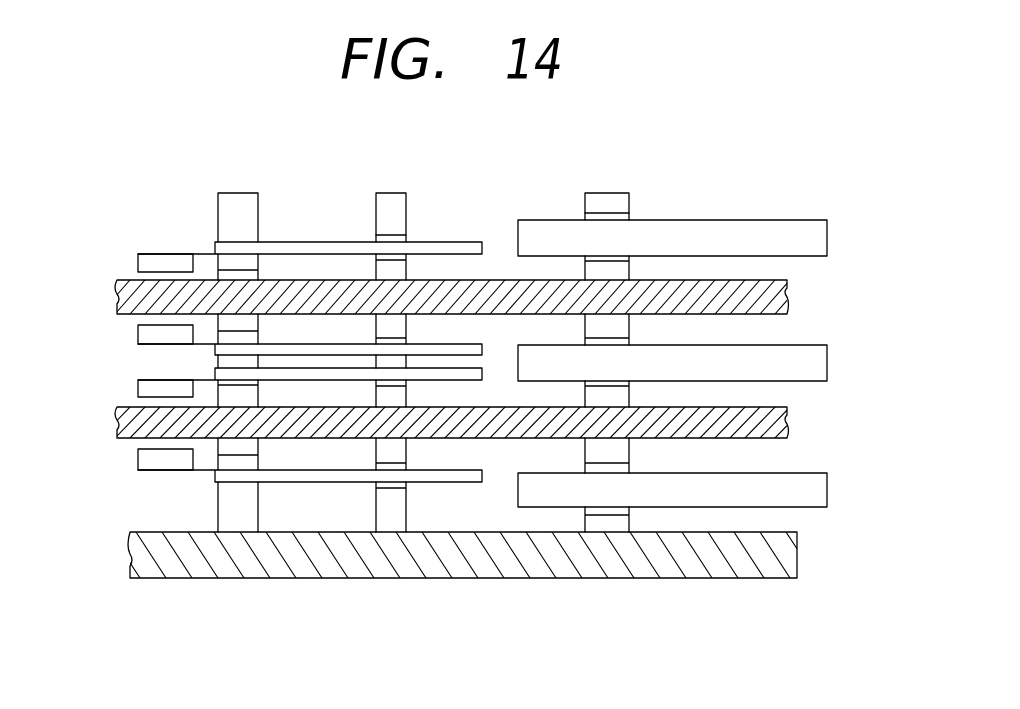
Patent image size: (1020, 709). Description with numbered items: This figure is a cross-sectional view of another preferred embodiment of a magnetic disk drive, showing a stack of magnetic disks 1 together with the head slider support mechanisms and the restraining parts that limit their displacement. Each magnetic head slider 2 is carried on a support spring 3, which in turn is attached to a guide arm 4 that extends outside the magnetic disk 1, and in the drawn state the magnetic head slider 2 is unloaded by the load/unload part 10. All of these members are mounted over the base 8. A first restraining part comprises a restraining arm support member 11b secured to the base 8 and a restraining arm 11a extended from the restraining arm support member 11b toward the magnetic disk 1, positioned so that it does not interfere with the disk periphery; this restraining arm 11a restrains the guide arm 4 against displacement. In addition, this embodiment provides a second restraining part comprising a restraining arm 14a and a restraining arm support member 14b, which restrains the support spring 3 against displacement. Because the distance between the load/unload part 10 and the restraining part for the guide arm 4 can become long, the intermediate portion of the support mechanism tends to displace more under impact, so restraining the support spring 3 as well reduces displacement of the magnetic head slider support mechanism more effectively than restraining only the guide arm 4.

The magnetic disk 1 is at (118, 296).
The magnetic head slider 2 is at (140, 263).
The support spring 3 is at (303, 242).
The guide arm 4 is at (815, 235).
The base 8 is at (130, 545).
The load/unload part 10 is at (237, 205).
The restraining arm 11a is at (603, 200).
The restraining arm support member 11b is at (628, 219).
The restraining arm 14a is at (392, 198).
The restraining arm support member 14b is at (407, 240).